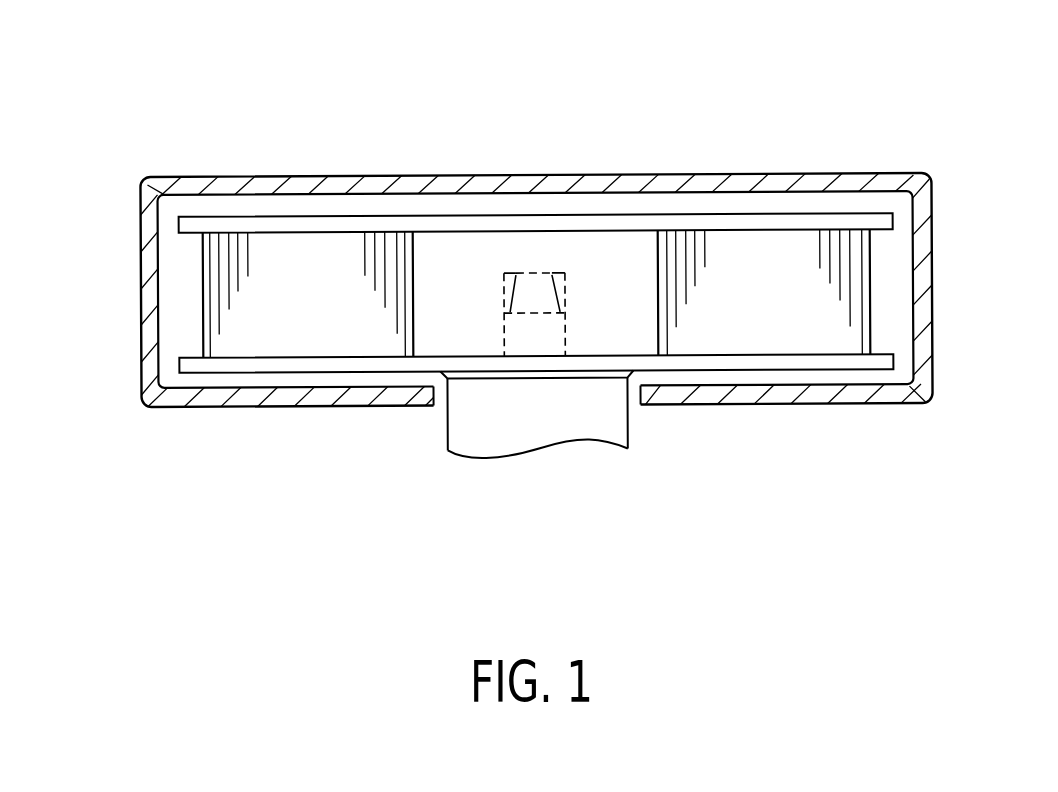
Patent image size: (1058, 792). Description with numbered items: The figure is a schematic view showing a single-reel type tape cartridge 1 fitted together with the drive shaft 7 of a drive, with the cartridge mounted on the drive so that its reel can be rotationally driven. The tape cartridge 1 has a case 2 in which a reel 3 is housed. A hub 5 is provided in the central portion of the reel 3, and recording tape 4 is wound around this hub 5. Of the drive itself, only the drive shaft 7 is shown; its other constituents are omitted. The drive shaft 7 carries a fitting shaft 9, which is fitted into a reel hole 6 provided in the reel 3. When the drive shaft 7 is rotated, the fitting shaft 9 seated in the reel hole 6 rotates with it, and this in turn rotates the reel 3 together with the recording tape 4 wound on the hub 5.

The tape cartridge 1 is at (860, 160).
The case 2 is at (141, 307).
The reel 3 is at (322, 215).
The recording tape 4 is at (203, 292).
The hub 5 is at (621, 260).
The reel hole 6 is at (565, 288).
The drive shaft 7 is at (573, 463).
The fitting shaft 9 is at (555, 325).